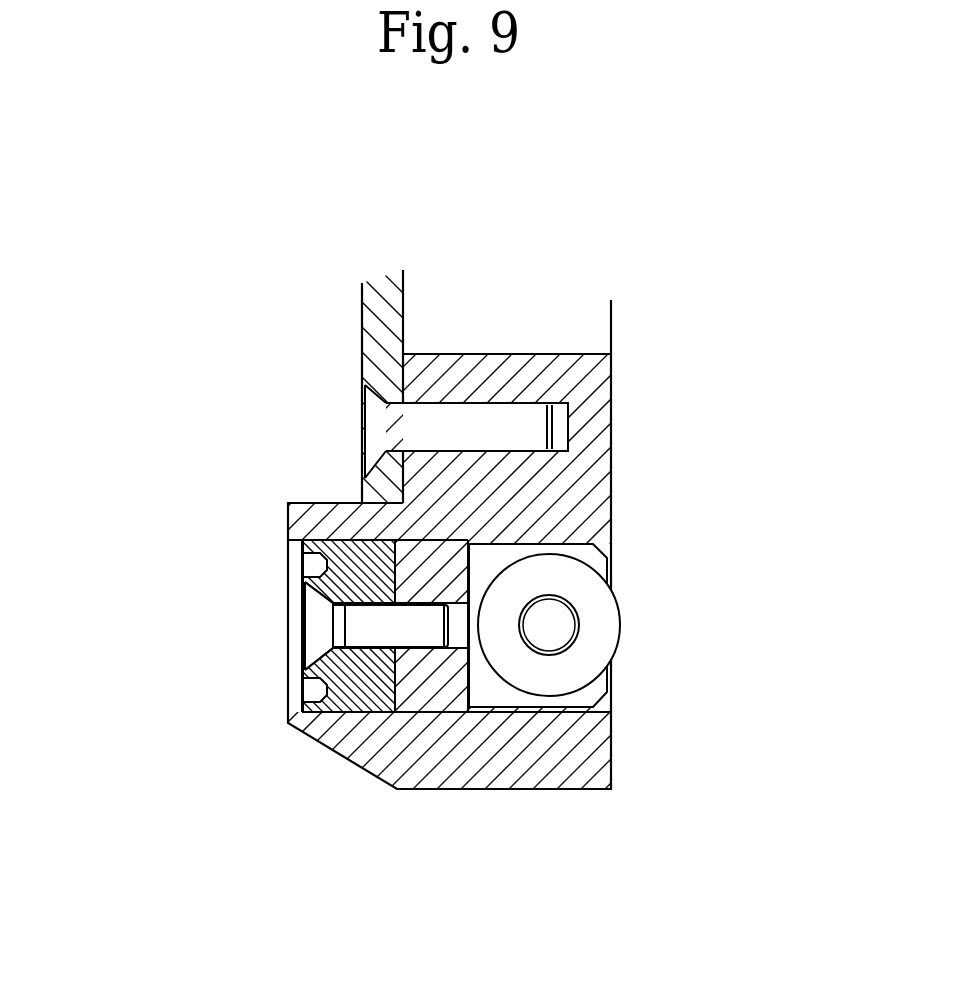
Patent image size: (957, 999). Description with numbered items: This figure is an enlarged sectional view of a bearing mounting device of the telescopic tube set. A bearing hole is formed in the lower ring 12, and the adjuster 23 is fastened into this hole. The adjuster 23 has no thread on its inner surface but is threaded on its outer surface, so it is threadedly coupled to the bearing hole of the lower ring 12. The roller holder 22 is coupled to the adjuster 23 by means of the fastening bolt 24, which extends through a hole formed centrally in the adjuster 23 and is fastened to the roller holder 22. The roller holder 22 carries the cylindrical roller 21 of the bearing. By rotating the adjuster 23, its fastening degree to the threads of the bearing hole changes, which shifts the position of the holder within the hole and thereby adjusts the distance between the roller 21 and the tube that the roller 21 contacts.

The lower ring 12 is at (603, 467).
The cylindrical roller 21 is at (607, 630).
The roller holder 22 is at (453, 687).
The adjuster 23 is at (367, 692).
The fastening bolt 24 is at (315, 625).